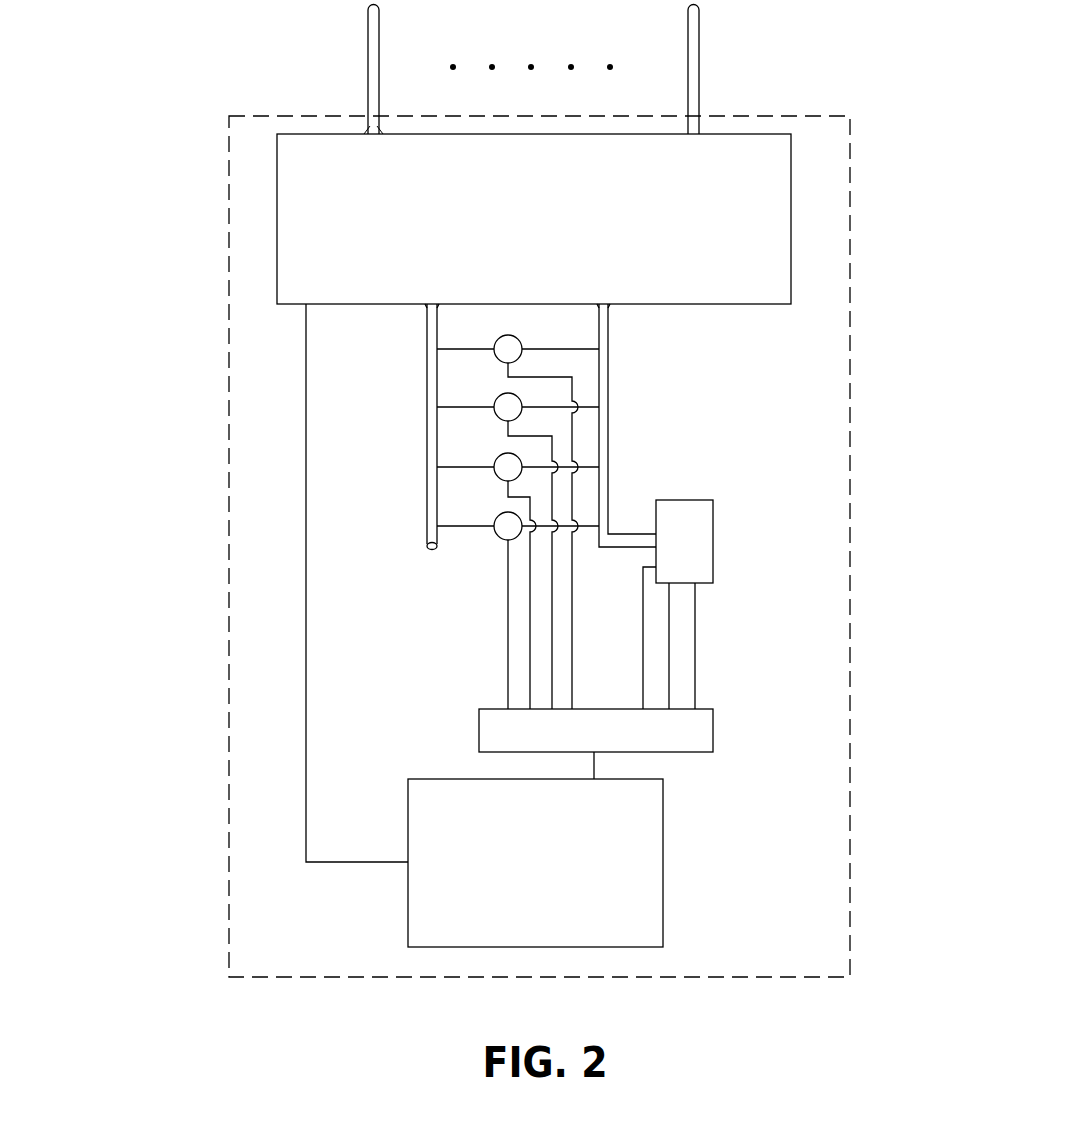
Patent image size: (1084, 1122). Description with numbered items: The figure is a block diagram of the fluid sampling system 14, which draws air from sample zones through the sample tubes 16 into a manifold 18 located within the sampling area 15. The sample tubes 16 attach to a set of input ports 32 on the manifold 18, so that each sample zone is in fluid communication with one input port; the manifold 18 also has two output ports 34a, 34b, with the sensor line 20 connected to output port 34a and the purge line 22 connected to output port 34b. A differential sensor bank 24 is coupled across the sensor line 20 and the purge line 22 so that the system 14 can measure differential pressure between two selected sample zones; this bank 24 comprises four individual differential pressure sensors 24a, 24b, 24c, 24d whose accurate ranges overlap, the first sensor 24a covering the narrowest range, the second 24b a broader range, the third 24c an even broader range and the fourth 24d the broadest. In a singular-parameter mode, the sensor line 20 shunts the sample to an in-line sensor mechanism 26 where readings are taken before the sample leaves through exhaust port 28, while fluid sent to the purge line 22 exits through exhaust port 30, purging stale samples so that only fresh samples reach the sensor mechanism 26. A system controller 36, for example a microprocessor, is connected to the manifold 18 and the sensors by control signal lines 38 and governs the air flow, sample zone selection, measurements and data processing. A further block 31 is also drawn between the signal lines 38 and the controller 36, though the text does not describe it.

The fluid sampling system 14 is at (133, 204).
The sampling area 15 is at (852, 199).
The sample tubes 16 is at (368, 36).
The manifold 18 is at (534, 219).
The sensor line 20 is at (651, 425).
The purge line 22 is at (427, 440).
The differential sensor bank 24 is at (518, 508).
The first differential pressure sensor 24a is at (498, 515).
The second differential pressure sensor 24b is at (498, 456).
The third differential pressure sensor 24c is at (498, 397).
The fourth differential pressure sensor 24d is at (516, 338).
The in-line sensor mechanism 26 is at (714, 540).
The exhaust port 28 is at (656, 549).
The exhaust port 30 is at (430, 552).
The driver circuit 31 is at (596, 730).
The input ports 32 is at (368, 134).
The output port 34a is at (610, 306).
The output port 34b is at (427, 306).
The system controller 36 is at (484, 625).
The control signal lines 38 is at (573, 617).